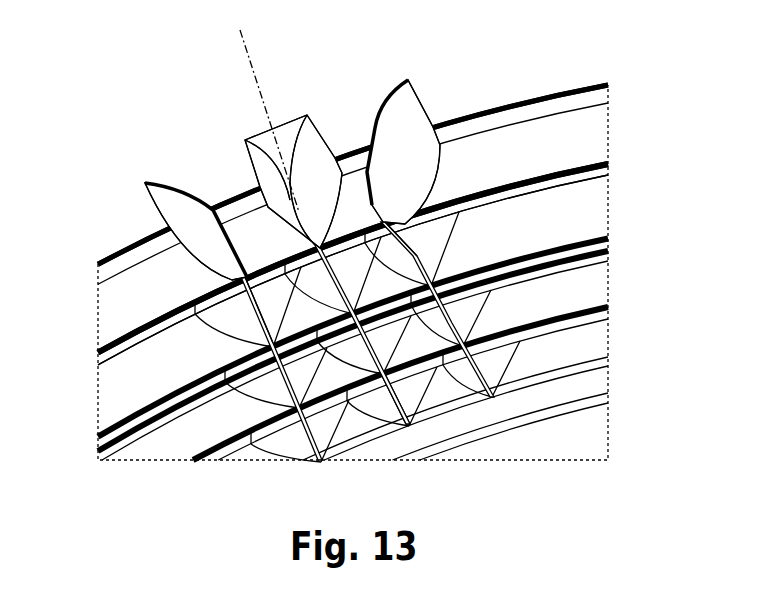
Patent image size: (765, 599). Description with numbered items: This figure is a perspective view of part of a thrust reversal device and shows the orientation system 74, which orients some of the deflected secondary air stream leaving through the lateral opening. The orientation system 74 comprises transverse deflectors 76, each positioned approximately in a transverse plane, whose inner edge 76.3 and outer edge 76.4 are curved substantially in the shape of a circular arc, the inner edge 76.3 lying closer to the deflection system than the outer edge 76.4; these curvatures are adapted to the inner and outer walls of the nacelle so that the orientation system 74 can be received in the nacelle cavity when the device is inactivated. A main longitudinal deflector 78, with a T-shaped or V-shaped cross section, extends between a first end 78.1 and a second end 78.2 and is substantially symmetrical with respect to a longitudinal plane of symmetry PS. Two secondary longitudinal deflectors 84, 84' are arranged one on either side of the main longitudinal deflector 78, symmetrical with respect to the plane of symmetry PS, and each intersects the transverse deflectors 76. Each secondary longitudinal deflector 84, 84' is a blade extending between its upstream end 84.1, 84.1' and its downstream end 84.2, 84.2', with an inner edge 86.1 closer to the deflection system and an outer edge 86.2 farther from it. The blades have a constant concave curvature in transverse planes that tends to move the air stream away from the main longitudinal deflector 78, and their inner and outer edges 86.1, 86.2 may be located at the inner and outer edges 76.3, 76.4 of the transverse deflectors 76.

The orientation system 74 is at (630, 370).
The transverse deflector 76 is at (130, 438).
The inner edge 76.3 is at (599, 168).
The outer edge 76.4 is at (594, 82).
The main longitudinal deflector 78 is at (299, 98).
The first end 78.1 is at (252, 165).
The second end 78.2 is at (427, 395).
The longitudinal plane of symmetry PS is at (262, 112).
The secondary longitudinal deflector 84 is at (430, 223).
The upstream end 84.1 is at (398, 130).
The downstream end 84.2 is at (525, 304).
The secondary longitudinal deflector 84' is at (178, 315).
The upstream end 84.1' is at (163, 195).
The downstream end 84.2' is at (272, 389).
The inner edge 86.1 is at (406, 247).
The outer edge 86.2 is at (417, 97).